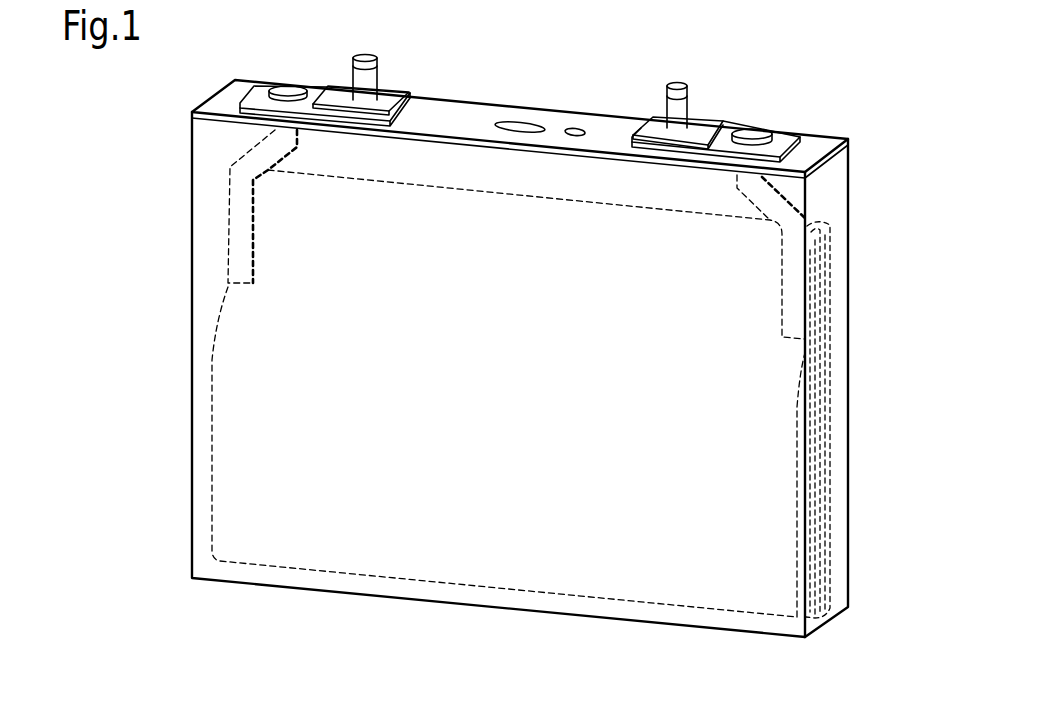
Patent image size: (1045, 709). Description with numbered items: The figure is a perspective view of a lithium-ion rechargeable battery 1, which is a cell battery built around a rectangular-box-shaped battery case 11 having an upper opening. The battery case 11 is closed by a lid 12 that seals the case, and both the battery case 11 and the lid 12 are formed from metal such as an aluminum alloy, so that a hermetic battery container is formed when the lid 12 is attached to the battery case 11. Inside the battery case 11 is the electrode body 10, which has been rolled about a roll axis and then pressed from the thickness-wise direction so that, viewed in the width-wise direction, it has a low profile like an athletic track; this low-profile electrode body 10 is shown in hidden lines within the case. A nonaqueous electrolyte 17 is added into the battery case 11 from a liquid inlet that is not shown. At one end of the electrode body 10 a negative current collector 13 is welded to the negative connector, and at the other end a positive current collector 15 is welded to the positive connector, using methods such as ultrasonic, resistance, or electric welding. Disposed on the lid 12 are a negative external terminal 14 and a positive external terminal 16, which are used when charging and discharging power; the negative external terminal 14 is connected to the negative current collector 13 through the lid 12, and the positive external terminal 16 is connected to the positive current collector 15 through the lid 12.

The lithium-ion rechargeable battery 1 is at (196, 84).
The electrode body 10 is at (212, 430).
The battery case 11 is at (850, 273).
The lid 12 is at (850, 140).
The negative current collector 13 is at (228, 215).
The negative external terminal 14 is at (367, 53).
The positive current collector 15 is at (813, 306).
The positive external terminal 16 is at (678, 83).
The nonaqueous electrolyte 17 is at (310, 573).